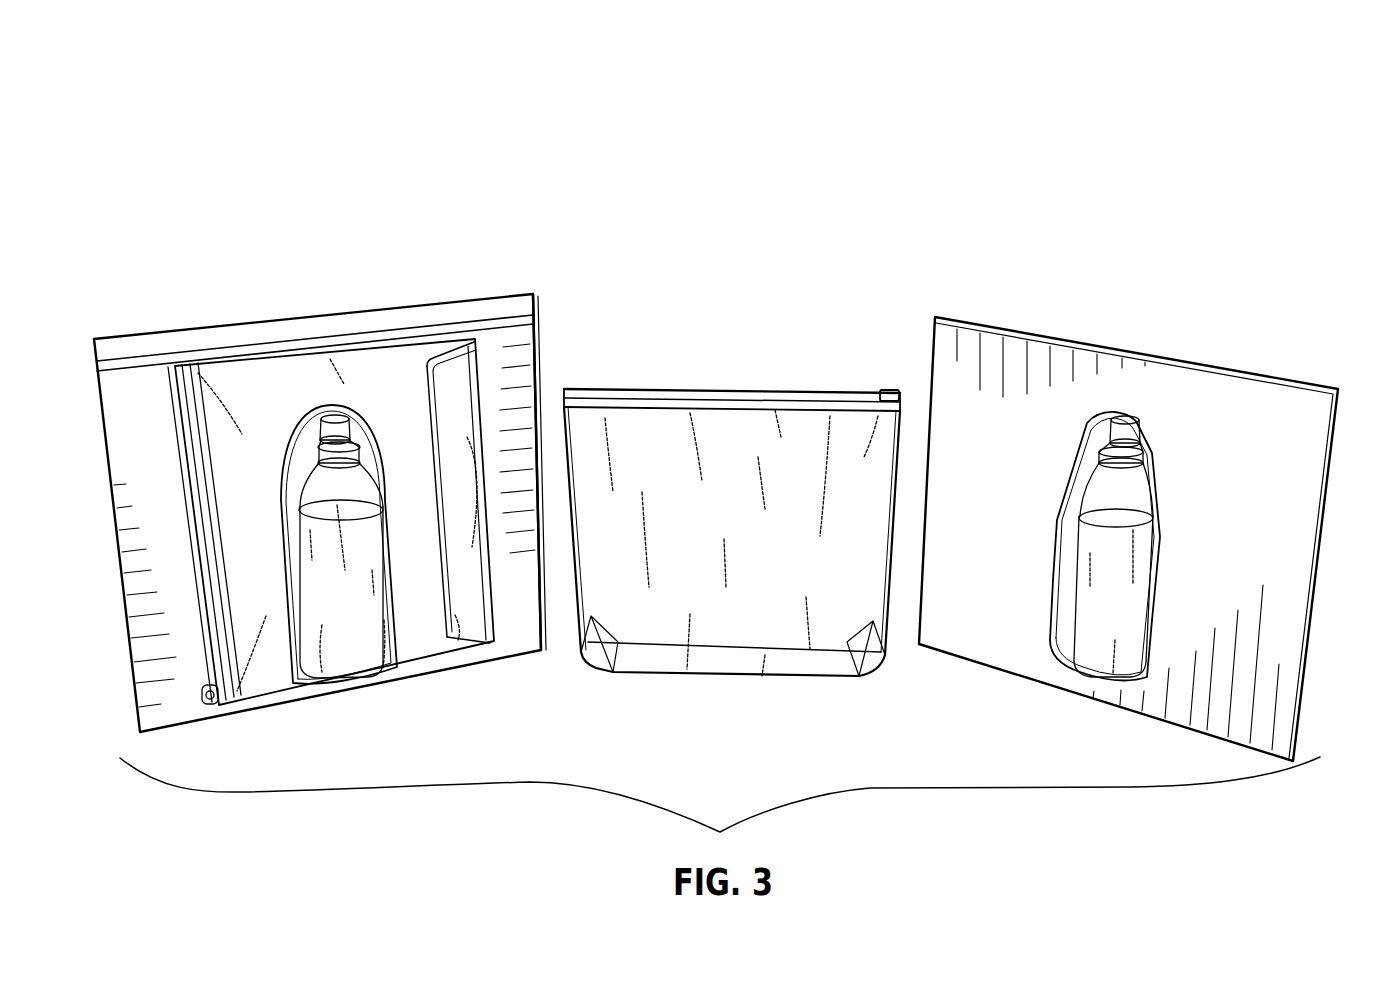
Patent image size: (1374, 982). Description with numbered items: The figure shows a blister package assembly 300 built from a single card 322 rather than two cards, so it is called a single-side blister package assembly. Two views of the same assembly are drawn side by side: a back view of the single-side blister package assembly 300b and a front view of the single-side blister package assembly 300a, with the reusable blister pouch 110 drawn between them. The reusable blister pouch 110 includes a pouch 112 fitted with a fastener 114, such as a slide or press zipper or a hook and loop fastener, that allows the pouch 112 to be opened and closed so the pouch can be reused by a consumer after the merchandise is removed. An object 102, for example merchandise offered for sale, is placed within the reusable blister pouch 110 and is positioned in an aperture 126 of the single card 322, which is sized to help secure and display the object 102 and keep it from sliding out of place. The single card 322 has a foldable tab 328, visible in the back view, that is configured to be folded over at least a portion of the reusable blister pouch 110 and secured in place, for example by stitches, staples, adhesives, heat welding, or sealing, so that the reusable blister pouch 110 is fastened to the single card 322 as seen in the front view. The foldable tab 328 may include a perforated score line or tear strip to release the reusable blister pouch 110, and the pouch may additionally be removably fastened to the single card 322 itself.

The blister package assembly 300 is at (290, 65).
The front view of single-side blister package assembly 300a is at (1108, 270).
The back view of single-side blister package assembly 300b is at (251, 251).
The reusable blister pouch 110 is at (740, 352).
The pouch 112 is at (783, 673).
The fastener 114 is at (883, 389).
The object 102 is at (1133, 458).
The aperture 126 is at (292, 478).
The single card 322 is at (132, 660).
The foldable tab 328 is at (518, 294).